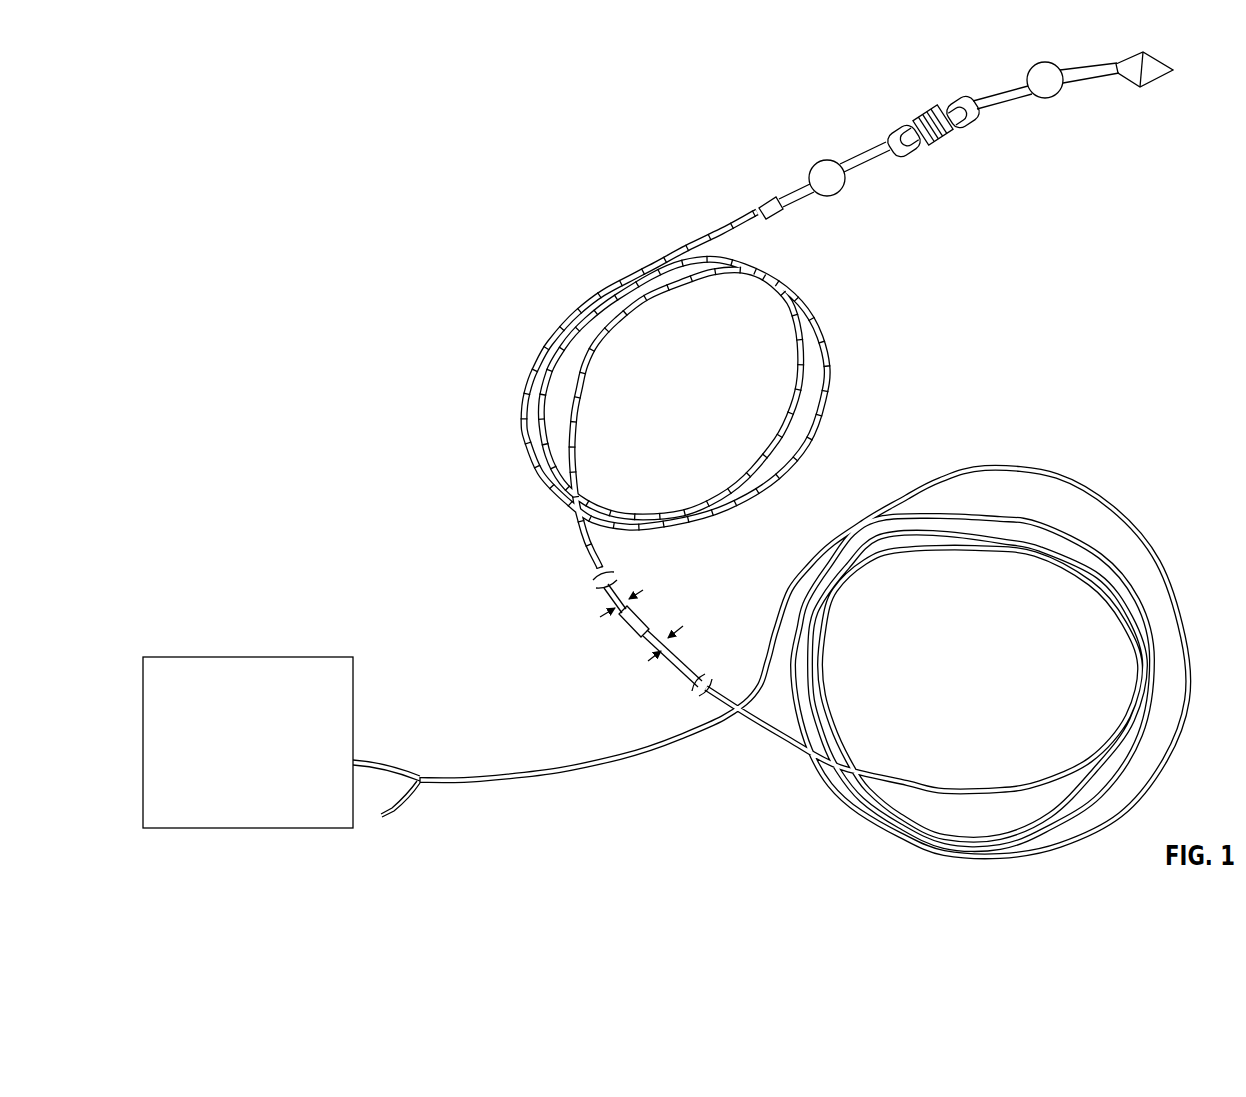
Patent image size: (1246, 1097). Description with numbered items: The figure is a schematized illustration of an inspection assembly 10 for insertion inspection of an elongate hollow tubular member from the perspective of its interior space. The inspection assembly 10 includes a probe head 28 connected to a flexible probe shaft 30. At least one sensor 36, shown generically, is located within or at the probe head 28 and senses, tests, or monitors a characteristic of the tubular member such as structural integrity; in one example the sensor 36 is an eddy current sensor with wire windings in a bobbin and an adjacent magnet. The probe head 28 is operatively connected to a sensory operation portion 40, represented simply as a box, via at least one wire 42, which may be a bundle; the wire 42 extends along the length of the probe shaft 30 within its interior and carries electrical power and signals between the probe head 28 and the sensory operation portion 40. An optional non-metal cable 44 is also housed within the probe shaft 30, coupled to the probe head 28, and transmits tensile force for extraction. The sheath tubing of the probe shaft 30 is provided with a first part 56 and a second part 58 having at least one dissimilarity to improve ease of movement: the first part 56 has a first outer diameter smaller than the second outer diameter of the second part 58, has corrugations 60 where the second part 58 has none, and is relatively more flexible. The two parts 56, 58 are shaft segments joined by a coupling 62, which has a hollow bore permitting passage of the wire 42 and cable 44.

The inspection assembly 10 is at (456, 160).
The probe head 28 is at (966, 135).
The sensor 36 is at (926, 125).
The flexible probe shaft 30 is at (625, 386).
The first part 56 is at (523, 450).
The corrugations 60 is at (612, 286).
The sensory operation portion 40 is at (307, 666).
The wire 42 is at (385, 765).
The non-metal cable 44 is at (407, 798).
The second part 58 is at (557, 783).
The coupling 62 is at (645, 624).